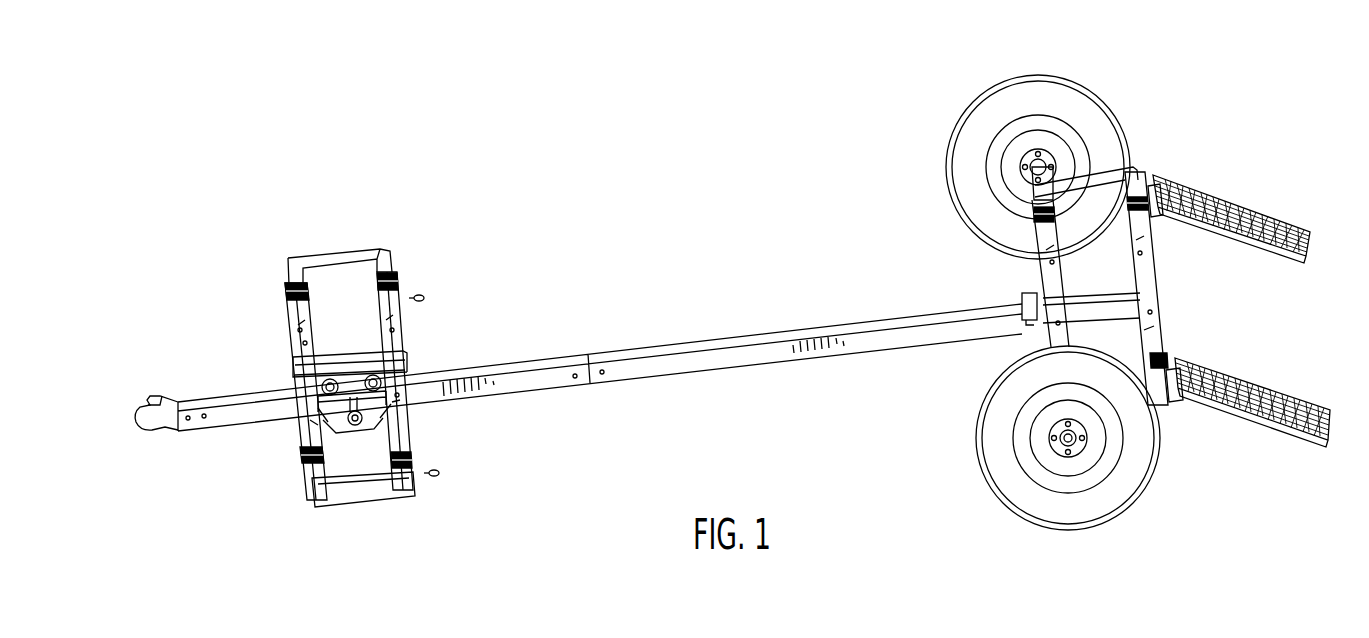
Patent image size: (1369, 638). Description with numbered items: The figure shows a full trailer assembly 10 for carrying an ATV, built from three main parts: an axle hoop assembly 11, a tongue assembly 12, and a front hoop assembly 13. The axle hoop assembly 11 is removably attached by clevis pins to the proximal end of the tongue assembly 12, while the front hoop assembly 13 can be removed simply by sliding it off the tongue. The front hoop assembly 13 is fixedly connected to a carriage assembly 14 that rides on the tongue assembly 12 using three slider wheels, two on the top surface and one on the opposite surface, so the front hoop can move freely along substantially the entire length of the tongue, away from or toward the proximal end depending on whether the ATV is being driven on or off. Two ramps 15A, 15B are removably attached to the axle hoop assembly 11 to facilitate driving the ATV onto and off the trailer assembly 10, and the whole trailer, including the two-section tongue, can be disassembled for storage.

The trailer assembly 10 is at (487, 80).
The axle hoop assembly 11 is at (1112, 168).
The tongue assembly 12 is at (652, 348).
The front hoop assembly 13 is at (385, 249).
The carriage assembly 14 is at (330, 425).
The ramp 15A is at (1288, 396).
The ramp 15B is at (1268, 216).